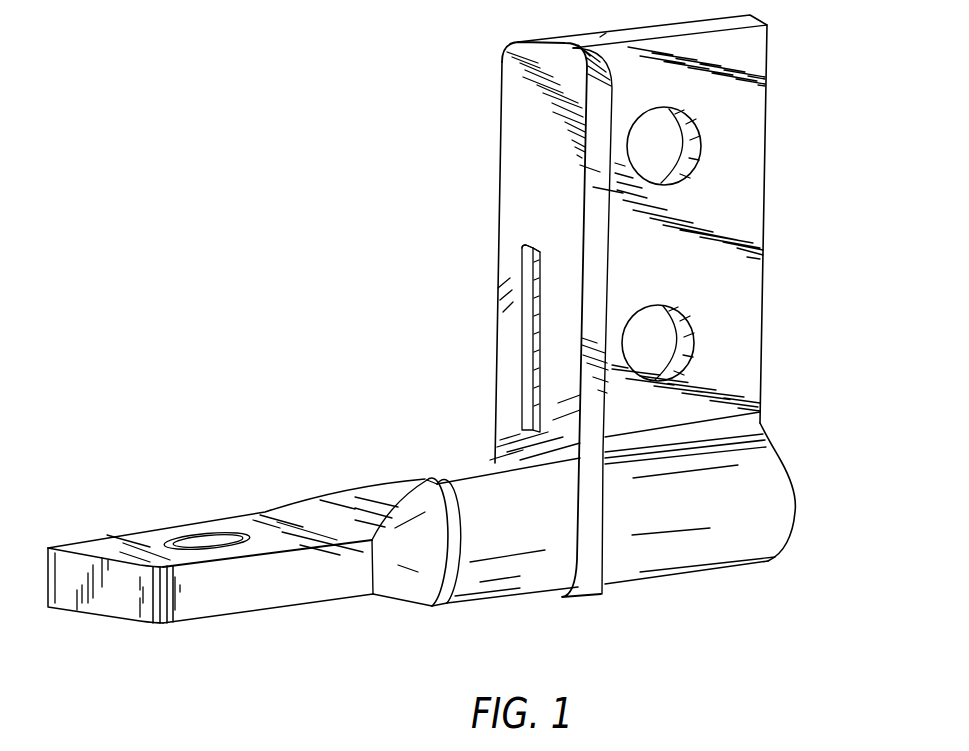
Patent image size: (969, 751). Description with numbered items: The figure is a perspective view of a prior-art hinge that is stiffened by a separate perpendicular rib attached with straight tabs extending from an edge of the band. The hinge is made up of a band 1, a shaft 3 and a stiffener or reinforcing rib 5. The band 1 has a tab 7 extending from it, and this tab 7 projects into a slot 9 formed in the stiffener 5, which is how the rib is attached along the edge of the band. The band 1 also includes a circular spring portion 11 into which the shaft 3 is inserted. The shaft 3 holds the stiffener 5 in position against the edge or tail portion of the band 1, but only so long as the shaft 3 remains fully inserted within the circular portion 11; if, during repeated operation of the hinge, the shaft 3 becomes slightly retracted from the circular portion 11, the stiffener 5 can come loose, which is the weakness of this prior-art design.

The band 1 is at (738, 215).
The shaft 3 is at (463, 480).
The stiffener or reinforcing rib 5 is at (504, 319).
The tab 7 is at (528, 332).
The slot 9 is at (520, 250).
The circular spring portion 11 is at (748, 515).